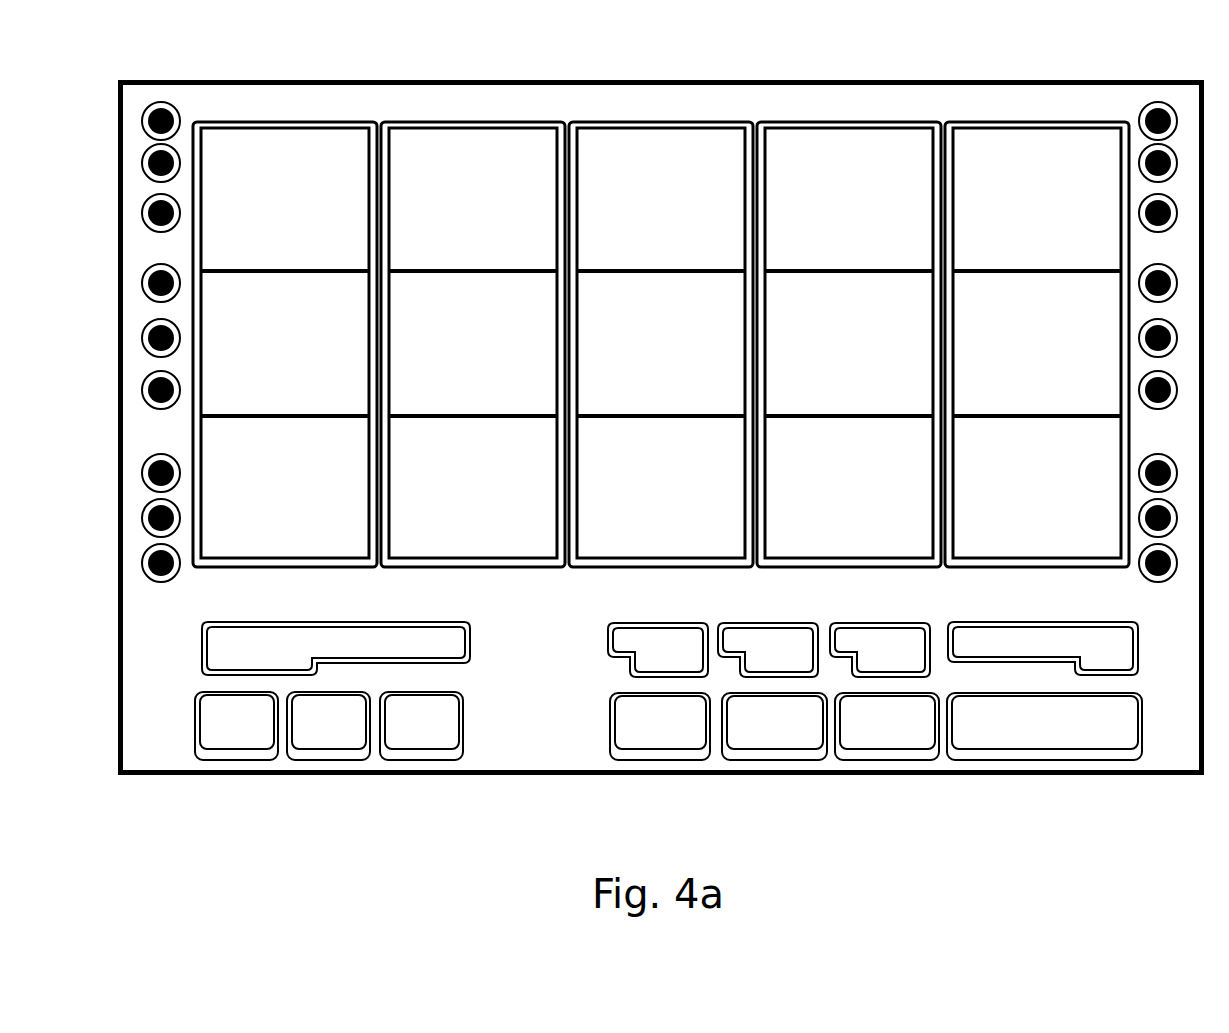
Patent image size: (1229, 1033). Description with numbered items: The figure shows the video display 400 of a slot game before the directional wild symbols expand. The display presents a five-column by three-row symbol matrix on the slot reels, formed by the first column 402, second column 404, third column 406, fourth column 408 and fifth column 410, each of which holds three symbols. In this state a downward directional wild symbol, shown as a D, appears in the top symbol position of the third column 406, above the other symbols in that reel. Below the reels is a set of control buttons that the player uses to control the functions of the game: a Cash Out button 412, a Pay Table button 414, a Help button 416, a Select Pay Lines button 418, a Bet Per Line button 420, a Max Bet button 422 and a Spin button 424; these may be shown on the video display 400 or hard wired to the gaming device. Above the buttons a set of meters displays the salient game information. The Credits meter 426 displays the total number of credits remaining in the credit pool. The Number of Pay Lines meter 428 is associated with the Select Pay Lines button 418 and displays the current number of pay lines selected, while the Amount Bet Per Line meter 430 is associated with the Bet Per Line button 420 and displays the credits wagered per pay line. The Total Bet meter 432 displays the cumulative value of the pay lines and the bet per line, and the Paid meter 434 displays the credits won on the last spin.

The video display 400 is at (137, 433).
The first column 402 is at (287, 140).
The second column 404 is at (474, 140).
The third column 406 is at (662, 140).
The fourth column 408 is at (850, 140).
The fifth column 410 is at (1038, 140).
The Cash Out button 412 is at (237, 750).
The Pay Table button 414 is at (328, 750).
The Help button 416 is at (421, 750).
The Select Pay Lines button 418 is at (660, 750).
The Bet Per Line button 420 is at (775, 750).
The Max Bet button 422 is at (886, 750).
The Spin button 424 is at (1040, 750).
The Credits meter 426 is at (310, 639).
The Number of Pay Lines meter 428 is at (640, 639).
The Amount Bet Per Line meter 430 is at (748, 639).
The Total Bet meter 432 is at (857, 639).
The Paid meter 434 is at (1005, 639).